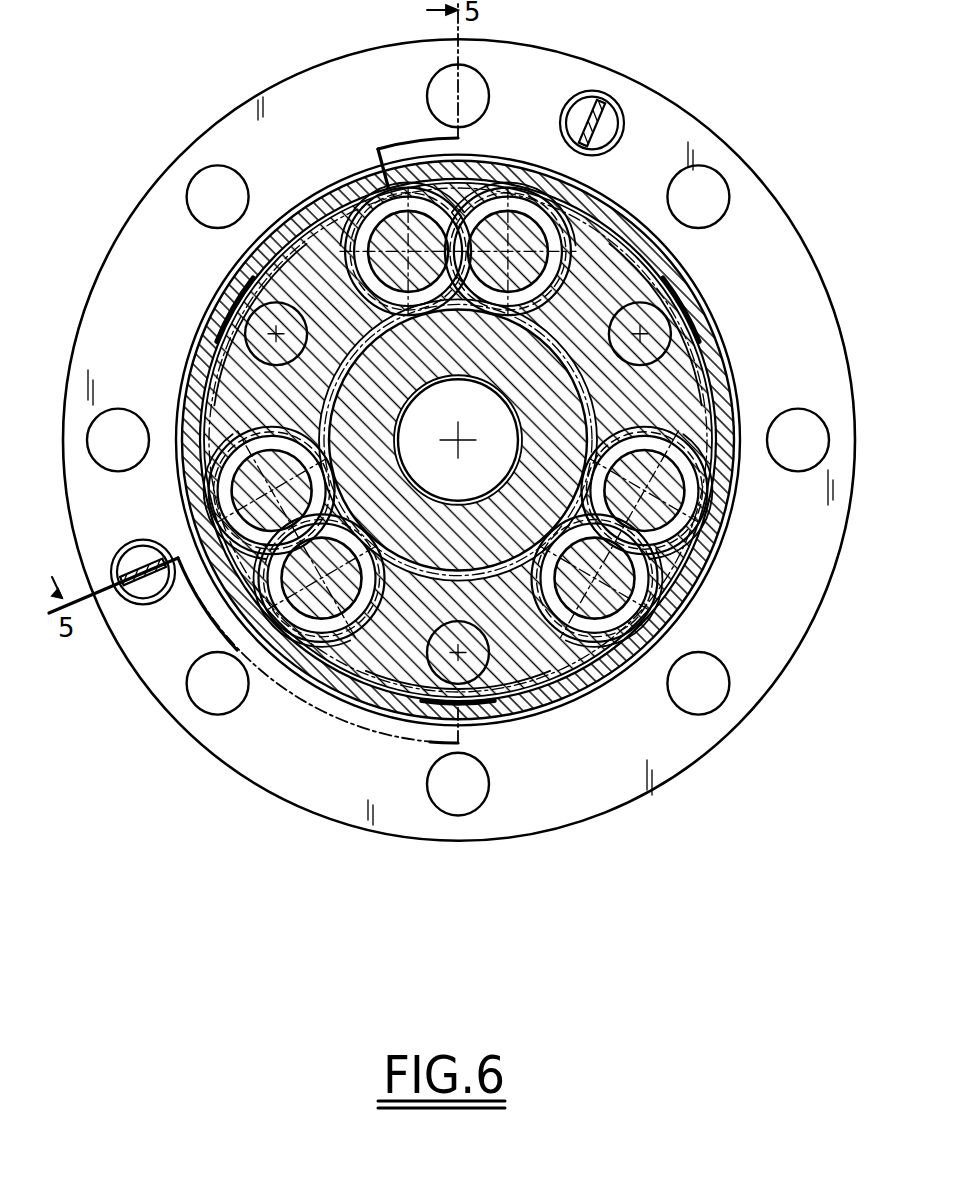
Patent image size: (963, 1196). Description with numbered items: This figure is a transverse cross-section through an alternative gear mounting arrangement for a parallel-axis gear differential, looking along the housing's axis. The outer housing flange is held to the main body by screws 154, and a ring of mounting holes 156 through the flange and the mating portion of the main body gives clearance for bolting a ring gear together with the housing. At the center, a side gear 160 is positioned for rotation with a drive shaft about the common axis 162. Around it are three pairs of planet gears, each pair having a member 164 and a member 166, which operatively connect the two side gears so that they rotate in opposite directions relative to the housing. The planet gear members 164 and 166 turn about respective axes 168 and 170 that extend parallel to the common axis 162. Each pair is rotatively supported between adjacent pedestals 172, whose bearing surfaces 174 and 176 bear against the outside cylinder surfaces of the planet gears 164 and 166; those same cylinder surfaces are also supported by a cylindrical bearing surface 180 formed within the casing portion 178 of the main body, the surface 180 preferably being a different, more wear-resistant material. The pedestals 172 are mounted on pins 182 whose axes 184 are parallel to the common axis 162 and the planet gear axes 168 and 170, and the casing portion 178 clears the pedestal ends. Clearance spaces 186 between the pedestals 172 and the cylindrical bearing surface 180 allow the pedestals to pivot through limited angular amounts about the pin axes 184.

The screws 154 is at (607, 118).
The mounting holes 156 is at (437, 95).
The side gear 160 is at (383, 420).
The common axis 162 is at (456, 445).
The planet gear member 164 is at (372, 188).
The planet gear member 166 is at (590, 205).
The planet gear axis 168 is at (430, 150).
The planet gear axis 170 is at (585, 182).
The pedestals 172 is at (237, 287).
The bearing surface 174 is at (350, 192).
The bearing surface 176 is at (592, 212).
The casing portion 178 is at (740, 387).
The cylindrical bearing surface 180 is at (488, 160).
The pins 182 is at (262, 342).
The pin axes 184 is at (247, 277).
The clearance spaces 186 is at (228, 308).